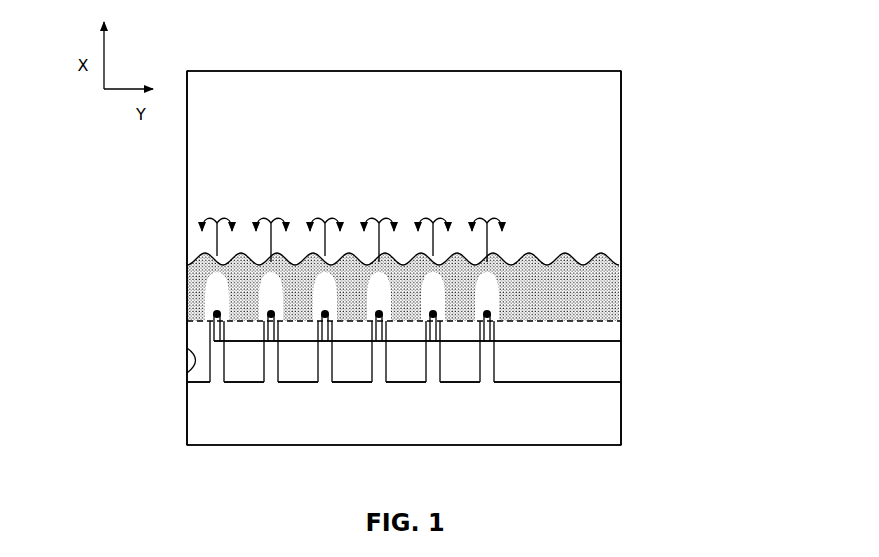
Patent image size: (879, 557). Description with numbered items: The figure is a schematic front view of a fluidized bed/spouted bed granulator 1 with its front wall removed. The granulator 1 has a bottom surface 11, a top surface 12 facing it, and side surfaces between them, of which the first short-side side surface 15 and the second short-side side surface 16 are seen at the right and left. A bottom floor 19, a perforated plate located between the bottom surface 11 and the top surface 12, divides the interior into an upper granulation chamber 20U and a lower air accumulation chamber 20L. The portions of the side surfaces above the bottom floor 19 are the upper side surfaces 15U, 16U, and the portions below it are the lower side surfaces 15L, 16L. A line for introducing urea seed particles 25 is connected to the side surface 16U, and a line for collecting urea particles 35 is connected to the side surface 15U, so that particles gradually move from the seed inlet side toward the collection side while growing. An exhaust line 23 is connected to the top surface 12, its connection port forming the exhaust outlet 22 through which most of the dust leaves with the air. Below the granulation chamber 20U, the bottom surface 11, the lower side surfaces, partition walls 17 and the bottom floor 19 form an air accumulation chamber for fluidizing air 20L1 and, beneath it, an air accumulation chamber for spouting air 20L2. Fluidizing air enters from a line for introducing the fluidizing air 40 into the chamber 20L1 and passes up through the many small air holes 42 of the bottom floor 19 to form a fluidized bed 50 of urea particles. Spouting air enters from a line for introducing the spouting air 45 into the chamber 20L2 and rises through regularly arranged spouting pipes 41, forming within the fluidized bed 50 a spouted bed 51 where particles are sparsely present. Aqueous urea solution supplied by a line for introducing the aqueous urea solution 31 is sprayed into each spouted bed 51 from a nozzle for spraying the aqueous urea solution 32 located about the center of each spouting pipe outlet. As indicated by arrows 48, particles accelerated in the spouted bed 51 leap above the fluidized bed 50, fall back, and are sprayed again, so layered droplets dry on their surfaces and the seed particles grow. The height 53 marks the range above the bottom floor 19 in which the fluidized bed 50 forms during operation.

The granulator 1 is at (650, 93).
The bottom surface 11 is at (283, 445).
The top surface 12 is at (354, 71).
The first short-side side surface 15 is at (799, 172).
The first short-side side surface upper portion 15U is at (621, 167).
The first short-side side surface lower portion 15L is at (620, 365).
The second short-side side surface 16 is at (44, 163).
The second short-side side surface upper portion 16U is at (187, 161).
The second short-side side surface lower portion 16L is at (187, 377).
The partition walls 17 is at (619, 386).
The bottom floor 19 is at (607, 331).
The granulation chamber 20U is at (413, 133).
The air accumulation chamber 20L is at (697, 357).
The air accumulation chamber for fluidizing air 20L1 is at (468, 363).
The air accumulation chamber for spouting air 20L2 is at (600, 416).
The exhaust outlet 22 is at (406, 71).
The exhaust line 23 is at (405, 71).
The line for introducing urea seed particles 25 is at (184, 247).
The line for introducing the aqueous urea solution 31 is at (623, 341).
The nozzle for spraying the aqueous urea solution 32 is at (485, 312).
The line for collecting urea particles 35 is at (621, 297).
The line for introducing the fluidizing air 40 is at (184, 360).
The spouting pipes 41 is at (386, 362).
The air holes 42 is at (580, 330).
The line for introducing the spouting air 45 is at (184, 415).
The arrows 48 is at (333, 228).
The fluidized bed 50 is at (594, 253).
The spouted bed 51 is at (217, 292).
The height 53 is at (188, 262).